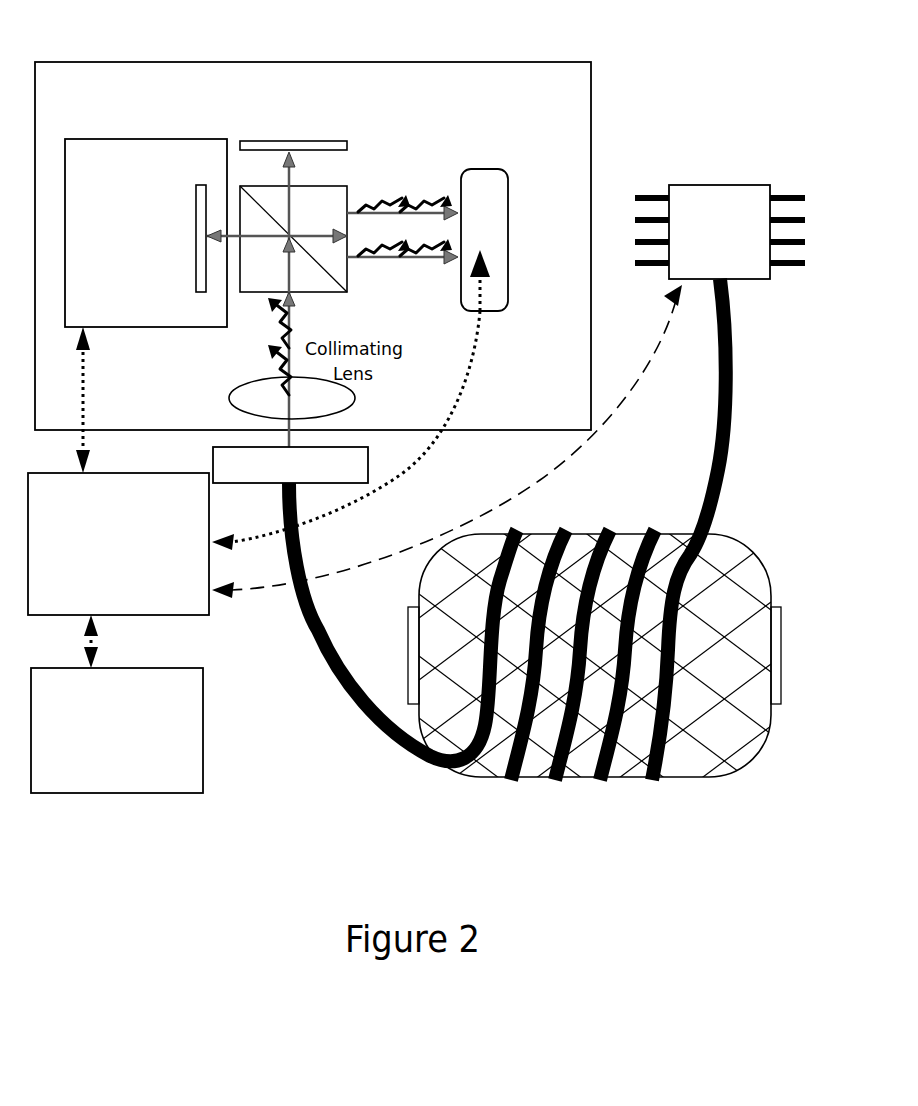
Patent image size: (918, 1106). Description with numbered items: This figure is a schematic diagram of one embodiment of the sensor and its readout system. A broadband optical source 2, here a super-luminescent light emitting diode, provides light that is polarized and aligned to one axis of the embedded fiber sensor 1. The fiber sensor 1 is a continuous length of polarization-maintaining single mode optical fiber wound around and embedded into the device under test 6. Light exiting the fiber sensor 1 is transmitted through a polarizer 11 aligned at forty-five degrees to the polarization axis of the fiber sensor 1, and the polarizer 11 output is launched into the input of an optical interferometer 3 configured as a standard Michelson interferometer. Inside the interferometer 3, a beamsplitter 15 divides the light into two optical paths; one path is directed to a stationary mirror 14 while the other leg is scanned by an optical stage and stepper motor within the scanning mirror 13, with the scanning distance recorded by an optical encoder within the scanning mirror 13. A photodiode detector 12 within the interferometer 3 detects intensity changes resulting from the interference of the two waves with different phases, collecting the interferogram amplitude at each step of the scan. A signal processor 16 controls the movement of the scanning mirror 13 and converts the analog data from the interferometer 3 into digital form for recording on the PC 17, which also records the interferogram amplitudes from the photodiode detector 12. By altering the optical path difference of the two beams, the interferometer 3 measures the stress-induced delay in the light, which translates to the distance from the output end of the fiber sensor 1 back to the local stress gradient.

The fiber sensor 1 is at (614, 534).
The broadband optical source 2 is at (692, 185).
The optical interferometer 3 is at (312, 62).
The device under test 6 is at (739, 765).
The polarizer 11 is at (368, 462).
The photodiode detector 12 is at (508, 207).
The scanning mirror 13 is at (108, 327).
The stationary mirror 14 is at (347, 145).
The beamsplitter 15 is at (347, 292).
The signal processor 16 is at (188, 615).
The PC 17 is at (188, 793).